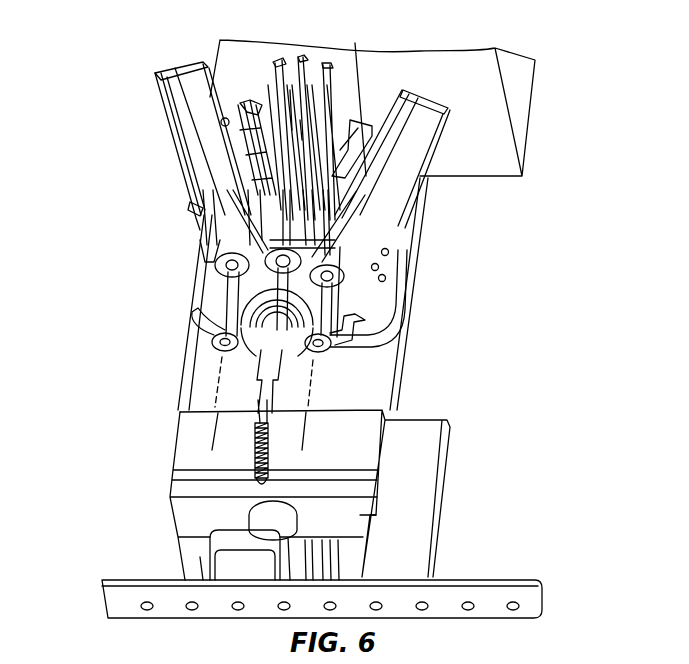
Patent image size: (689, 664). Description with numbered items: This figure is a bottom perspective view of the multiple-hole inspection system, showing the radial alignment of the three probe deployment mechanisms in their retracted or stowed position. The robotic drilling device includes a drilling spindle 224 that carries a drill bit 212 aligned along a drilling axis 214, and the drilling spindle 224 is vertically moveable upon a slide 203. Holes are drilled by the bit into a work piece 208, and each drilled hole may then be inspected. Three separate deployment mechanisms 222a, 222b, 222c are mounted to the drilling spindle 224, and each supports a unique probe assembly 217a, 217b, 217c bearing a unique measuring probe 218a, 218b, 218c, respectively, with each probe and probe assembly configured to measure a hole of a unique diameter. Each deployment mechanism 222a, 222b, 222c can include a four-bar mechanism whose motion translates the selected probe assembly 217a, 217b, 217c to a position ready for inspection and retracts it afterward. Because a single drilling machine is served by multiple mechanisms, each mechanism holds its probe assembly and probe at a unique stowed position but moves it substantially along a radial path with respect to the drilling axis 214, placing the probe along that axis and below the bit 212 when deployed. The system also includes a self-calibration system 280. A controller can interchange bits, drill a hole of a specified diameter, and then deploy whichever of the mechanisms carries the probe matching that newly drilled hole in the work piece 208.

The drilling spindle 224 is at (230, 53).
The deployment mechanism 222a is at (157, 117).
The deployment mechanism 222b is at (338, 86).
The deployment mechanism 222c is at (437, 155).
The probe assembly 217a is at (206, 263).
The probe assembly 217b is at (277, 282).
The probe assembly 217c is at (350, 281).
The measuring probe 218a is at (228, 283).
The measuring probe 218b is at (220, 337).
The measuring probe 218c is at (323, 306).
The self-calibration system 280 is at (218, 349).
The slide 203 is at (380, 352).
The drill bit 212 is at (280, 400).
The drilling axis 214 is at (258, 483).
The work piece 208 is at (498, 578).